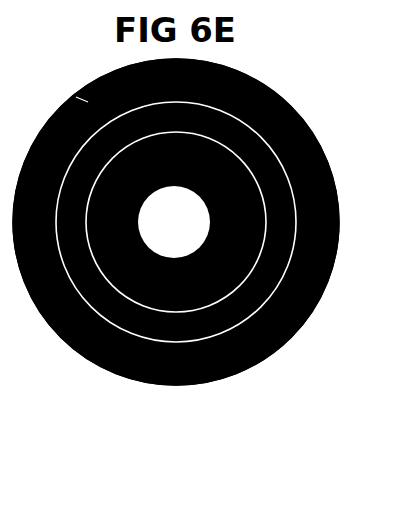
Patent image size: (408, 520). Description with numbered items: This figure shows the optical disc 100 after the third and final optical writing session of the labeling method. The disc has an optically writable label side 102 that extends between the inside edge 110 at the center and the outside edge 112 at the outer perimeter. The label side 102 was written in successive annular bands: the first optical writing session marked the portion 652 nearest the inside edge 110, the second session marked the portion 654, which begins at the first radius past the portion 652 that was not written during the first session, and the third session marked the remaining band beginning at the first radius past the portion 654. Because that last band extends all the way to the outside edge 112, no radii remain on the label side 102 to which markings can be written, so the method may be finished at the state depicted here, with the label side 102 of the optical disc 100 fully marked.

The optical disc 100 is at (179, 258).
The optically writable label side 102 is at (73, 84).
The outside edge 112 is at (266, 90).
The inside edge 110 is at (151, 222).
The portion of the label side 652 is at (150, 291).
The portion of the label side 654 is at (150, 321).